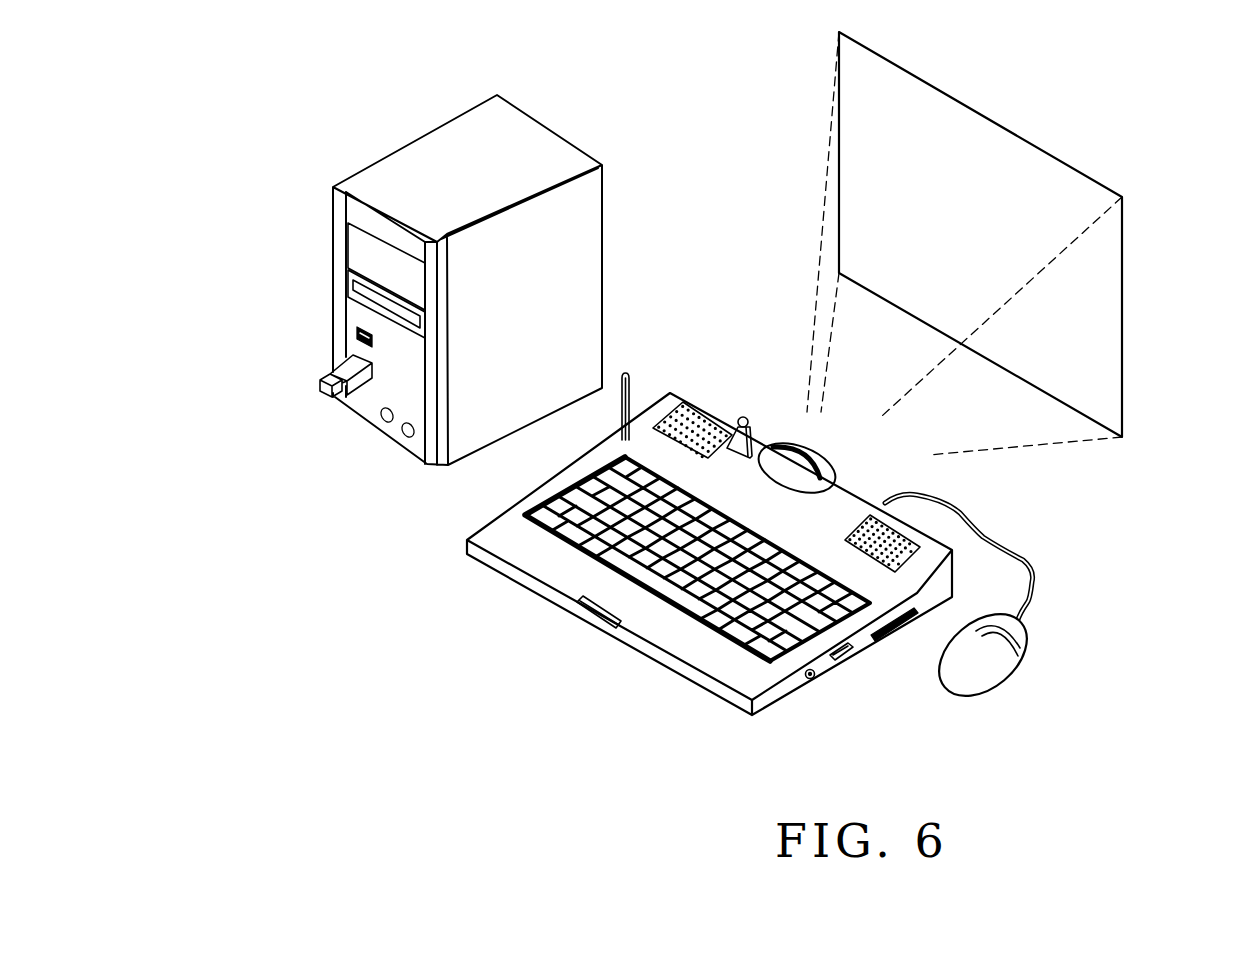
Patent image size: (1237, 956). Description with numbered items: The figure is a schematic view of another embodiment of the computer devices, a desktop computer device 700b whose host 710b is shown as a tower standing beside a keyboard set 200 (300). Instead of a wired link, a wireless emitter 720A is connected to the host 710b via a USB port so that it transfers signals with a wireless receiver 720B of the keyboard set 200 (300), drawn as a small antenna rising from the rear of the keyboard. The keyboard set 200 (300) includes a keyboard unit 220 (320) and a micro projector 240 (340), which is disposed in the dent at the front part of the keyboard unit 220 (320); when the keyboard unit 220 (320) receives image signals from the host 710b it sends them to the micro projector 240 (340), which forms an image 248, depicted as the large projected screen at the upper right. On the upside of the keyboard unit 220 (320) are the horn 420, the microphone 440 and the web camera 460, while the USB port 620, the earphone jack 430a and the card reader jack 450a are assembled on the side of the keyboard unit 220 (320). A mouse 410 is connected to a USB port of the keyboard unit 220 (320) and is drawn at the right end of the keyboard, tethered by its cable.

The desktop computer device 700b is at (300, 80).
The host 710b is at (533, 130).
The wireless emitter 720A is at (335, 358).
The wireless receiver 720B is at (626, 372).
The keyboard set 200 is at (767, 283).
The keyboard set 300 is at (758, 435).
The image 248 is at (1124, 272).
The horn 420 is at (683, 398).
The web camera 460 is at (745, 417).
The micro projector 240 is at (792, 449).
The micro projector 340 is at (853, 463).
The microphone 440 is at (577, 603).
The keyboard unit 220 is at (645, 655).
The keyboard unit 320 is at (709, 555).
The earphone jack 430a is at (808, 680).
The USB port 620 is at (839, 663).
The card reader jack 450a is at (902, 628).
The mouse 410 is at (993, 668).